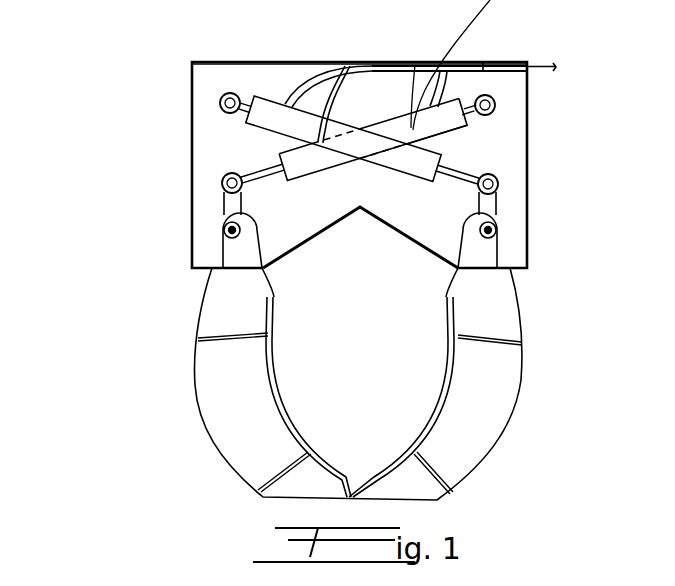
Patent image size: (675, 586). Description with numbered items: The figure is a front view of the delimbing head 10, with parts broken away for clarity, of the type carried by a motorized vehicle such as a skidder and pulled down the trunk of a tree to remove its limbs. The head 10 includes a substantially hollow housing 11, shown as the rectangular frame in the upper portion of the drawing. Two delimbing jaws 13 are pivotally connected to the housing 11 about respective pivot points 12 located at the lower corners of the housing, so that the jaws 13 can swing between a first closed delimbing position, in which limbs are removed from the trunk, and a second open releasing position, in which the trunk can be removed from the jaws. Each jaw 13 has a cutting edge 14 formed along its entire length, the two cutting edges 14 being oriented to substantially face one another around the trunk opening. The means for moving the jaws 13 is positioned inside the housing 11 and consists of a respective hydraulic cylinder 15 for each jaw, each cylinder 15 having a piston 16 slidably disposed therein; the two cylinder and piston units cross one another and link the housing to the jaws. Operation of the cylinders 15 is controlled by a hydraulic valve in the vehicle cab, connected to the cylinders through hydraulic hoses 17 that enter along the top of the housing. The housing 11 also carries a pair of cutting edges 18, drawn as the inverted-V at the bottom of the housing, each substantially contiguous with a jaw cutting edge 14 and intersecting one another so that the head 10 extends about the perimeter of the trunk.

The delimbing head 10 is at (148, 181).
The housing 11 is at (213, 113).
The pivot point 12 is at (232, 233).
The delimbing jaws 13 is at (462, 433).
The cutting edge 14 is at (268, 343).
The cylinder 15 is at (296, 122).
The piston 16 is at (462, 172).
The hydraulic hoses 17 is at (383, 62).
The cutting edges 18 is at (306, 247).